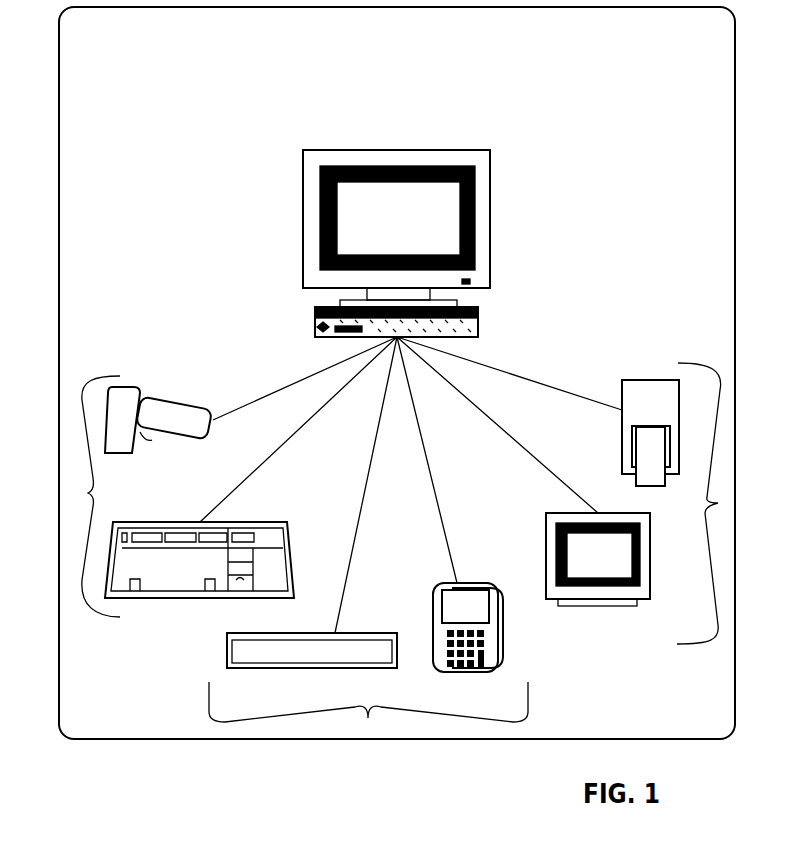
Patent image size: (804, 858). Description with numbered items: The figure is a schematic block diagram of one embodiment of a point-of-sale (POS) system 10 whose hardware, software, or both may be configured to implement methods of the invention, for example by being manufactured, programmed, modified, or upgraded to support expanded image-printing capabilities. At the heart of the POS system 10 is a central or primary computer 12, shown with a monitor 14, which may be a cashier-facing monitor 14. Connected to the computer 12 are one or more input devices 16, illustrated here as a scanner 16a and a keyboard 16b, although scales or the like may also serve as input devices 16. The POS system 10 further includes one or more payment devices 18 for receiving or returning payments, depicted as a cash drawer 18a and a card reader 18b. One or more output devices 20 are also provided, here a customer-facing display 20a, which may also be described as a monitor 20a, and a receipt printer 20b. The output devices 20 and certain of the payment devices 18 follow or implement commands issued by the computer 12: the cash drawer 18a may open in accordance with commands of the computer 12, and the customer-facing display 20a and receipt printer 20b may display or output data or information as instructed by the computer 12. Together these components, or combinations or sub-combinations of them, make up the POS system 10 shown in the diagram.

The POS system 10 is at (570, 76).
The computer 12 is at (503, 299).
The monitor 14 is at (285, 186).
The input devices 16 is at (88, 493).
The scanner 16a is at (172, 420).
The keyboard 16b is at (268, 532).
The payment devices 18 is at (368, 718).
The cash drawer 18a is at (312, 652).
The card reader 18b is at (457, 585).
The output devices 20 is at (720, 503).
The customer-facing display 20a is at (595, 568).
The receipt printer 20b is at (641, 400).